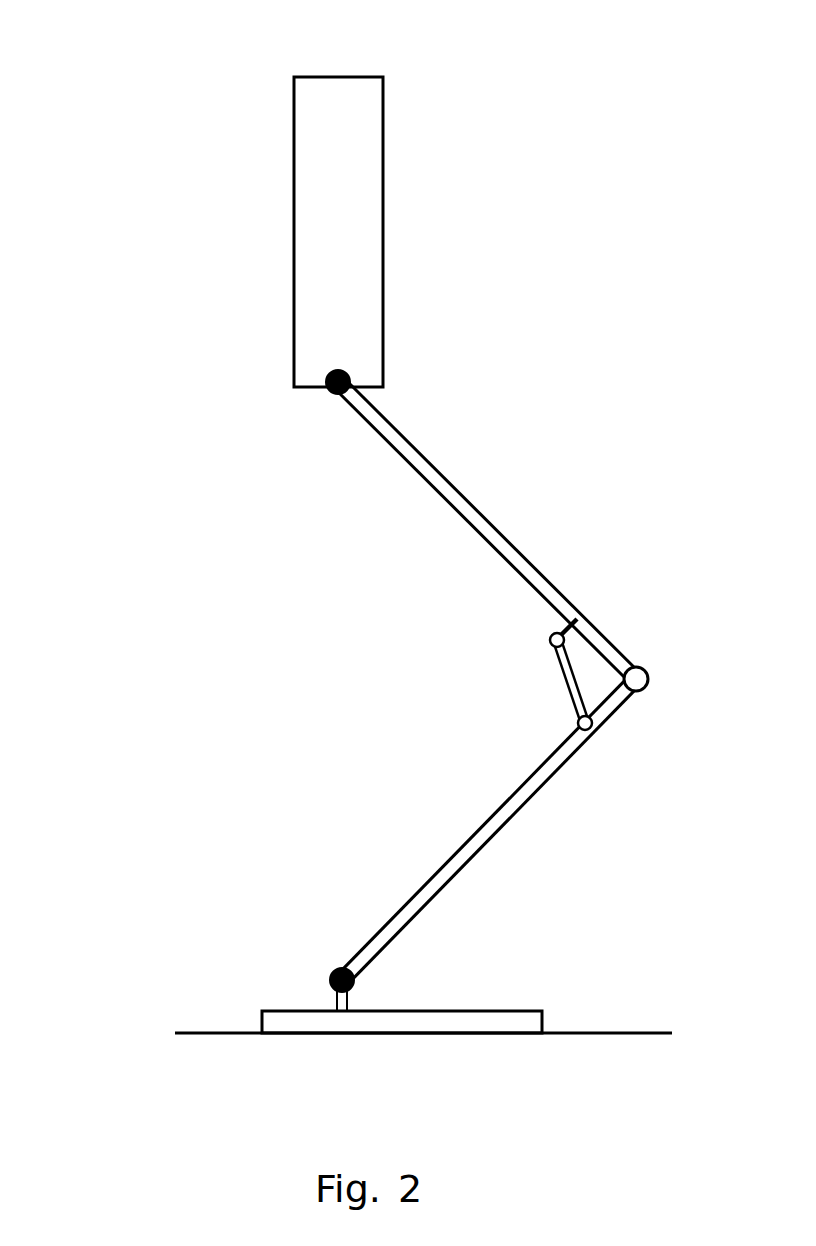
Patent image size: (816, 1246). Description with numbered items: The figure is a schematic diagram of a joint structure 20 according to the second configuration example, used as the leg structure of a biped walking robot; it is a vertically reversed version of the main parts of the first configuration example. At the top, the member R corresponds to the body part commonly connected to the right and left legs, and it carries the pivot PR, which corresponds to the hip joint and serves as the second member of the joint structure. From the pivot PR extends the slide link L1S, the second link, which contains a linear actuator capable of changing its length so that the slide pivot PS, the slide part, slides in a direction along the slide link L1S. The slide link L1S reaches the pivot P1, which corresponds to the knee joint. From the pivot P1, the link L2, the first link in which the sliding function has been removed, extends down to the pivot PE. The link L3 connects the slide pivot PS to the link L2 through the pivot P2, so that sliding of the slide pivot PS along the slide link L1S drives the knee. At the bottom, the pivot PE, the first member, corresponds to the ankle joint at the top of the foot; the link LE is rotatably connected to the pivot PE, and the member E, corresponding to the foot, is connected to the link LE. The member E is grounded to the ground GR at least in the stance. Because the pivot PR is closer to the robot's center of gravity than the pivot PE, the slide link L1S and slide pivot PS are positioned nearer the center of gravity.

The joint structure 20 is at (168, 113).
The member R is at (367, 155).
The pivot PR is at (325, 398).
The slide link L1S is at (500, 543).
The slide pivot PS is at (550, 637).
The pivot P1 is at (640, 678).
The link L3 is at (567, 675).
The pivot P2 is at (580, 723).
The link L2 is at (447, 877).
The pivot PE is at (330, 972).
The link LE is at (335, 1005).
The member E is at (508, 1018).
The ground GR is at (647, 1033).